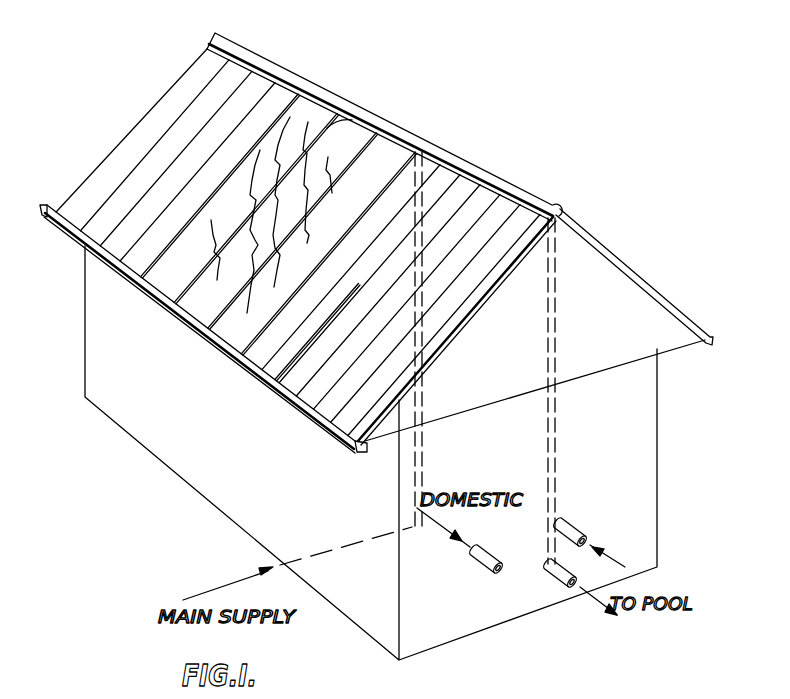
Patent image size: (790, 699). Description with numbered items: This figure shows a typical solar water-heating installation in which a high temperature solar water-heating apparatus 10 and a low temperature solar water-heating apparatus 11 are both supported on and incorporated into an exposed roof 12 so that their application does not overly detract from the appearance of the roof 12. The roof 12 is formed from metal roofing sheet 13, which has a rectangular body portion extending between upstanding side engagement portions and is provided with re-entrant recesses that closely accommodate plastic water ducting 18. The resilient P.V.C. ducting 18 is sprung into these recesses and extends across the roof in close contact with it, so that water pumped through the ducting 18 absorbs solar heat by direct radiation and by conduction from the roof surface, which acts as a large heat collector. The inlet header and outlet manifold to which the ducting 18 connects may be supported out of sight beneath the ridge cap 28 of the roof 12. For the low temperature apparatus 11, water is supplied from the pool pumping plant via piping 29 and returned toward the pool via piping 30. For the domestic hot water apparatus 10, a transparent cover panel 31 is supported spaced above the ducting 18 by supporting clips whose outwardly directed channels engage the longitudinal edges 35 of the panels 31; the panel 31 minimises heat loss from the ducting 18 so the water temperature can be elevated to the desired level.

The high temperature solar water-heating apparatus 10 is at (312, 73).
The low temperature solar water-heating apparatus 11 is at (420, 127).
The roof 12 is at (105, 157).
The metal roofing sheet 13 is at (483, 286).
The plastic water ducting 18 is at (272, 386).
The ridge cap 28 is at (510, 182).
The piping 29 is at (574, 525).
The piping 30 is at (557, 591).
The transparent cover panel 31 is at (203, 307).
The longitudinal edges 35 is at (357, 137).